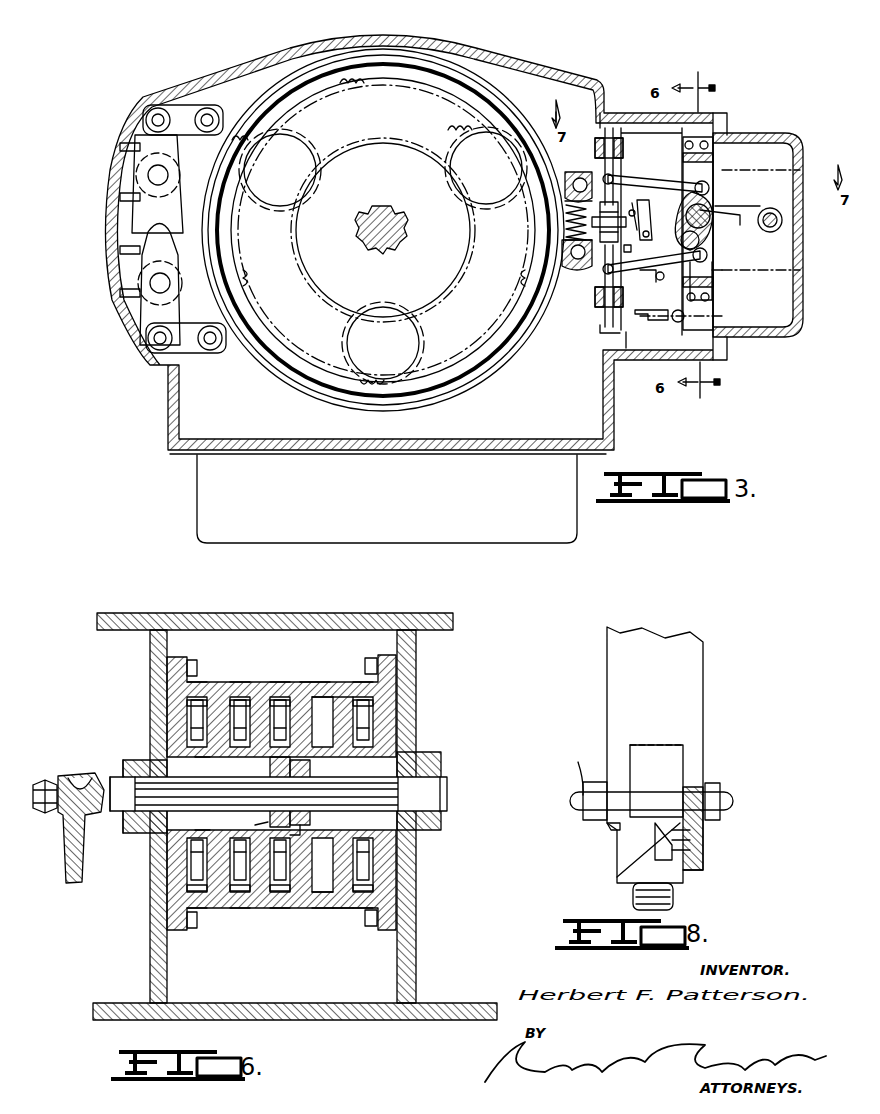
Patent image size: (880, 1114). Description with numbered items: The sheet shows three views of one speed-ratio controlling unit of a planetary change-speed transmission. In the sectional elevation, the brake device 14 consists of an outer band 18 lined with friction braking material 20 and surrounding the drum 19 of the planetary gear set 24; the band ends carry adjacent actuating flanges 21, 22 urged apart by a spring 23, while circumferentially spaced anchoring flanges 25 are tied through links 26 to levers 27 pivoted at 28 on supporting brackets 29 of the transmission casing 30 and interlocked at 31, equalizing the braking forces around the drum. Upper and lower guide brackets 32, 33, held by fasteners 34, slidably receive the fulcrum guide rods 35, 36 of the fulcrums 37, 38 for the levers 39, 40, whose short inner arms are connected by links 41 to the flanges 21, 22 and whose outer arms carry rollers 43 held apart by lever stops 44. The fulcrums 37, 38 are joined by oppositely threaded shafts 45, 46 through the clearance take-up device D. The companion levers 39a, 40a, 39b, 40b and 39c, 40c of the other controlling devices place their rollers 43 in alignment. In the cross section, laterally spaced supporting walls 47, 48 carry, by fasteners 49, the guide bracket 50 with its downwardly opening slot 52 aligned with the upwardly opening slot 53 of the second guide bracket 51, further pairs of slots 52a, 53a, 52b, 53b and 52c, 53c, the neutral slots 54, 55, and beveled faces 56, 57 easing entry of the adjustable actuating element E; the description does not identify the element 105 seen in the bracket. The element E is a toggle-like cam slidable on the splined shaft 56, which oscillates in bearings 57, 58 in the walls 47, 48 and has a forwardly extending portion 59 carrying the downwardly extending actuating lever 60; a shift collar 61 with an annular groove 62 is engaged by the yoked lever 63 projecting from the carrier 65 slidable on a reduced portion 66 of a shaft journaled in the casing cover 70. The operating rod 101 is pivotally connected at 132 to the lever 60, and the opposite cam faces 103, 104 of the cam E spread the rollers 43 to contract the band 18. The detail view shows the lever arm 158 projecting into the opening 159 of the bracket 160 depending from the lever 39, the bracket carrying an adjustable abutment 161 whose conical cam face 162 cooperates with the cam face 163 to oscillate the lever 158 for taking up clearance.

In FIG. 3, the brake device 14 is at (503, 76).
In FIG. 3, the outer band 18 is at (480, 378).
In FIG. 3, the drum 19 is at (478, 346).
In FIG. 3, the friction braking material 20 is at (572, 188).
In FIG. 3, the actuating flange 21 is at (600, 165).
In FIG. 3, the actuating flange 22 is at (590, 270).
In FIG. 3, the spring 23 is at (570, 225).
In FIG. 3, the planetary gear set 24 is at (378, 146).
In FIG. 3, the anchoring flanges 25 is at (228, 105).
In FIG. 3, the links 26 is at (175, 105).
In FIG. 3, the levers 27 is at (120, 147).
In FIG. 3, the pivot 28 is at (168, 172).
In FIG. 3, the supporting brackets 29 is at (120, 197).
In FIG. 3, the transmission casing 30 is at (138, 170).
In FIG. 3, the interlock 31 is at (138, 227).
In FIG. 3, the upper guide bracket 32 is at (628, 122).
In FIG. 3, the lower guide bracket 33 is at (600, 325).
In FIG. 3, the fasteners 34 is at (598, 126).
In FIG. 3, the fulcrum guide rod 35 is at (602, 108).
In FIG. 3, the fulcrum guide rod 36 is at (608, 328).
In FIG. 3, the fulcrum 37 is at (624, 146).
In FIG. 3, the fulcrum 38 is at (624, 298).
In FIG. 3, the lever 39 is at (672, 180).
In FIG. 6, the lever 39 is at (284, 700).
In FIG. 6, the actuating lever 39a is at (244, 700).
In FIG. 6, the actuating lever 39b is at (197, 700).
In FIG. 6, the actuating lever 39c is at (363, 700).
In FIG. 3, the lever 40 is at (645, 279).
In FIG. 6, the lever 40 is at (284, 892).
In FIG. 6, the actuating lever 40a is at (242, 892).
In FIG. 6, the actuating lever 40b is at (198, 892).
In FIG. 6, the actuating lever 40c is at (363, 892).
In FIG. 3, the links 41 is at (575, 207).
In FIG. 3, the rollers 43 is at (710, 184).
In FIG. 6, the rollers 43 is at (270, 760).
In FIG. 3, the lever stops 44 is at (658, 220).
In FIG. 3, the threaded shaft 45 is at (619, 208).
In FIG. 3, the threaded shaft 46 is at (648, 258).
In FIG. 6, the supporting wall 47 is at (150, 707).
In FIG. 6, the supporting wall 48 is at (397, 690).
In FIG. 6, the fasteners 49 is at (373, 657).
In FIG. 3, the guide bracket 50 is at (712, 150).
In FIG. 6, the guide bracket 50 is at (312, 682).
In FIG. 6, the second guide bracket 51 is at (316, 920).
In FIG. 6, the slot 52 is at (276, 682).
In FIG. 6, the slot 52a is at (232, 682).
In FIG. 6, the slot 52b is at (190, 698).
In FIG. 6, the slot 52c is at (390, 682).
In FIG. 6, the slot 53 is at (280, 908).
In FIG. 6, the slot 53a is at (247, 908).
In FIG. 6, the slot 53b is at (190, 900).
In FIG. 6, the slot 53c is at (385, 880).
In FIG. 6, the neutral slot 54 is at (338, 697).
In FIG. 6, the neutral slot 55 is at (340, 908).
In FIG. 3, the splined shaft 56 is at (667, 280).
In FIG. 6, the splined shaft 56 is at (410, 757).
In FIG. 6, the bearing 57 is at (142, 760).
In FIG. 6, the bearing 58 is at (440, 775).
In FIG. 6, the forwardly extending portion 59 is at (80, 780).
In FIG. 3, the actuating lever 60 is at (714, 280).
In FIG. 6, the actuating lever 60 is at (84, 855).
In FIG. 6, the shift collar 61 is at (292, 770).
In FIG. 6, the annular groove 62 is at (310, 785).
In FIG. 3, the yoked lever 63 is at (720, 226).
In FIG. 6, the yoked lever 63 is at (305, 826).
In FIG. 3, the carrier 65 is at (722, 270).
In FIG. 3, the reduced portion 66 is at (768, 210).
In FIG. 3, the casing cover 70 is at (770, 133).
In FIG. 3, the operating shaft 101 is at (652, 322).
In FIG. 3, the cam face 103 is at (712, 196).
In FIG. 3, the cam face 104 is at (705, 240).
In FIG. 6, the cam face 104 is at (323, 874).
In FIG. 6, the hole 105 is at (323, 712).
In FIG. 3, the pivotal connection 132 is at (690, 316).
In FIG. 3, the lever arm 158 is at (633, 240).
In FIG. 8, the lever arm 158 is at (660, 798).
In FIG. 8, the opening 159 is at (668, 757).
In FIG. 3, the bracket 160 is at (660, 148).
In FIG. 8, the bracket 160 is at (690, 660).
In FIG. 8, the adjustable abutment 161 is at (700, 840).
In FIG. 8, the conical cam face 162 is at (655, 850).
In FIG. 8, the cam face 163 is at (608, 828).
In FIG. 3, the clearance take-up device D is at (631, 215).
In FIG. 8, the clearance take-up device D is at (572, 771).
In FIG. 3, the adjustable actuating element E is at (737, 196).
In FIG. 6, the adjustable actuating element E is at (254, 825).